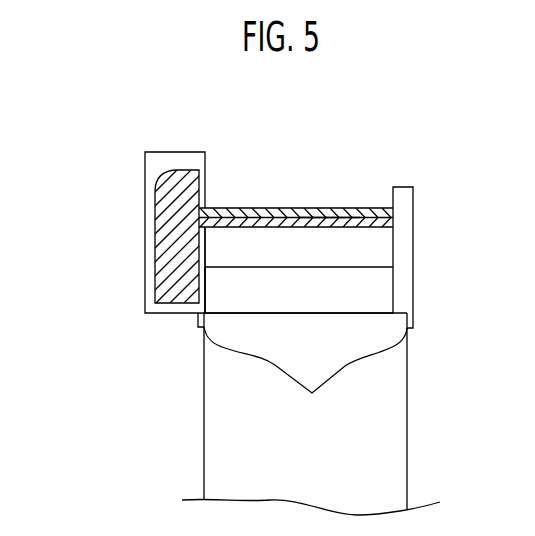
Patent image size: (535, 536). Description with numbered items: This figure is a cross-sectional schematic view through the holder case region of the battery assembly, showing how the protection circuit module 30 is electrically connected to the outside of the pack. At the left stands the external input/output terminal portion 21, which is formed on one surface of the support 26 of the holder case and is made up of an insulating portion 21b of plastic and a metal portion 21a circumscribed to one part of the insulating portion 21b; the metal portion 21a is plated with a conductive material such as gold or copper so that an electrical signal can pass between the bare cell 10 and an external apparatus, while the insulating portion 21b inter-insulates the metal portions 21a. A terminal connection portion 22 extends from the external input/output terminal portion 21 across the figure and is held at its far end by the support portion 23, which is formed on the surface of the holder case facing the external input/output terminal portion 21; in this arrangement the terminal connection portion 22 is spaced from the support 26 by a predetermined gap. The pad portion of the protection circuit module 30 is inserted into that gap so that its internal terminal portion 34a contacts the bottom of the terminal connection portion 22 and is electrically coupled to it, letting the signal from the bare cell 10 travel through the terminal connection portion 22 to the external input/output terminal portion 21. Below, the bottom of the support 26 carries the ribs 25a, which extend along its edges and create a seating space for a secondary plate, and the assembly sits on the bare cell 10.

The bare cell 10 is at (400, 422).
The external input/output terminal portion 21 is at (64, 199).
The metal portion 21a is at (163, 247).
The insulating portion 21b is at (155, 207).
The terminal connection portion 22 is at (253, 212).
The support portion 23 is at (403, 212).
The ribs 25a is at (305, 373).
The support 26 is at (373, 293).
The protection circuit module 30 is at (385, 250).
The internal terminal portion 34a is at (328, 221).